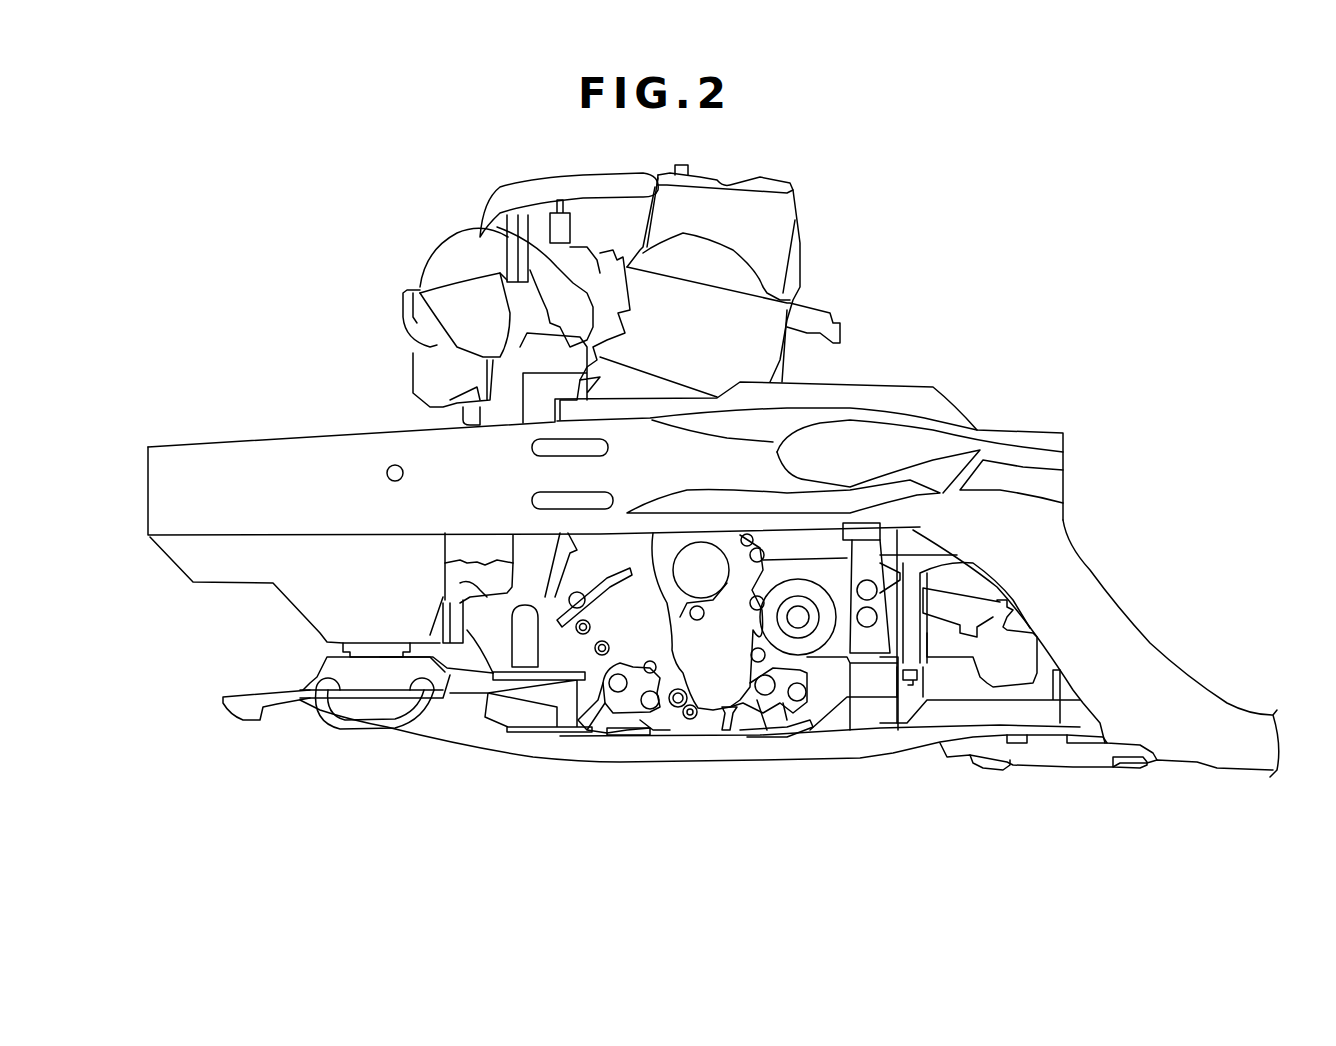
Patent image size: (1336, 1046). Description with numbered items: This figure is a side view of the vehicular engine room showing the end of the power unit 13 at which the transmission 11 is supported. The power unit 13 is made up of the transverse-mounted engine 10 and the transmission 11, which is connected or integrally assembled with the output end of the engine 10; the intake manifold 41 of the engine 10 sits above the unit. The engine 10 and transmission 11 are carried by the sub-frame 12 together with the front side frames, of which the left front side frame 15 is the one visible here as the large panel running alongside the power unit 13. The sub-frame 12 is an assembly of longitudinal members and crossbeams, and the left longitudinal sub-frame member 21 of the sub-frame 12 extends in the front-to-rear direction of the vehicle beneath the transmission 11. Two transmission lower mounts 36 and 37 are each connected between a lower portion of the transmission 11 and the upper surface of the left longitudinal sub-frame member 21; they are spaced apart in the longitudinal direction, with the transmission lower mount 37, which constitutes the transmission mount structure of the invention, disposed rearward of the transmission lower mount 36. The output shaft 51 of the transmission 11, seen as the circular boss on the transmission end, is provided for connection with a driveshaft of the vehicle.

The engine 10 is at (720, 333).
The transmission 11 is at (627, 608).
The sub-frame 12 is at (944, 750).
The power unit 13 is at (803, 223).
The left front side frame 15 is at (300, 435).
The left longitudinal sub-frame member 21 is at (870, 760).
The transmission lower mount 36 is at (625, 740).
The transmission lower mount 37 is at (765, 740).
The intake manifold 41 is at (441, 246).
The output shaft 51 is at (798, 617).